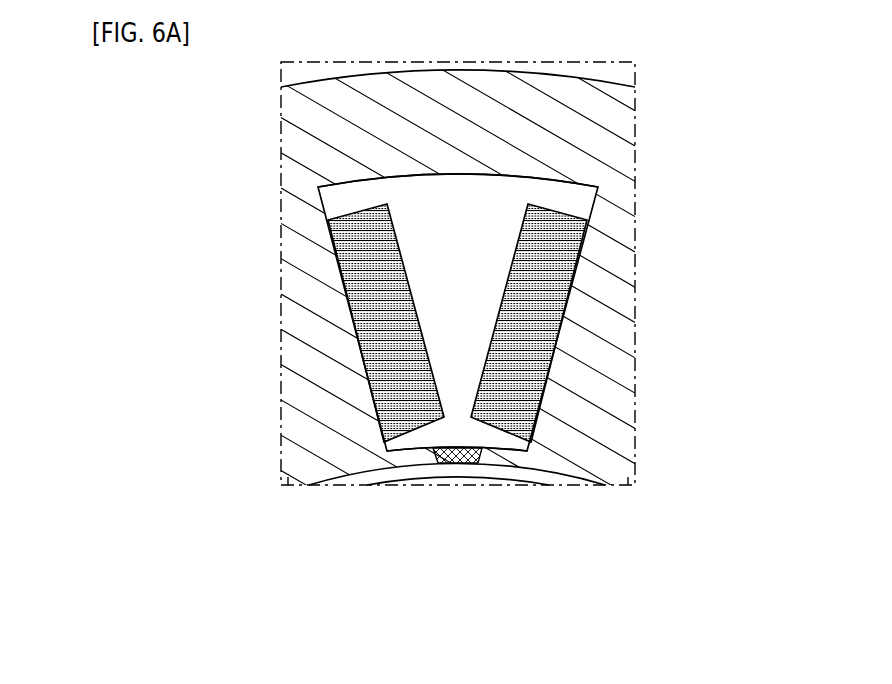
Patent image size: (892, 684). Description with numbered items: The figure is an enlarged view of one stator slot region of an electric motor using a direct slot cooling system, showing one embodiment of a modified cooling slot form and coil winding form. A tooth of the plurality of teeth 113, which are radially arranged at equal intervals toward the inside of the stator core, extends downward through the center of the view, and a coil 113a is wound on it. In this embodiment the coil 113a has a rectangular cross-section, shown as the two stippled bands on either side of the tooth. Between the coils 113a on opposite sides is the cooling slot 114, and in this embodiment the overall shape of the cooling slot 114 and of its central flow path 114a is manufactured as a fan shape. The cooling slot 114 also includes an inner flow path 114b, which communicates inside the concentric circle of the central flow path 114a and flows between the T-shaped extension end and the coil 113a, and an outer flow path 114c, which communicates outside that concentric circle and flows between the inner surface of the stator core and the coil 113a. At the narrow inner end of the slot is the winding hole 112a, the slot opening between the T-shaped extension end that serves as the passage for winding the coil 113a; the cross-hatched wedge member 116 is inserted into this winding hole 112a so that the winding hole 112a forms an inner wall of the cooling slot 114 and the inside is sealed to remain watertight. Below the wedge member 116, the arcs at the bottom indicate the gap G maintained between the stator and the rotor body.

The teeth 113 is at (620, 407).
The coil 113a is at (557, 340).
The cooling slot 114 is at (348, 307).
The central flow path 114a is at (444, 272).
The inner flow path 114b is at (358, 209).
The outer flow path 114c is at (355, 433).
The wedge member 116 is at (465, 542).
The winding hole 112a is at (459, 457).
The gap G is at (522, 475).